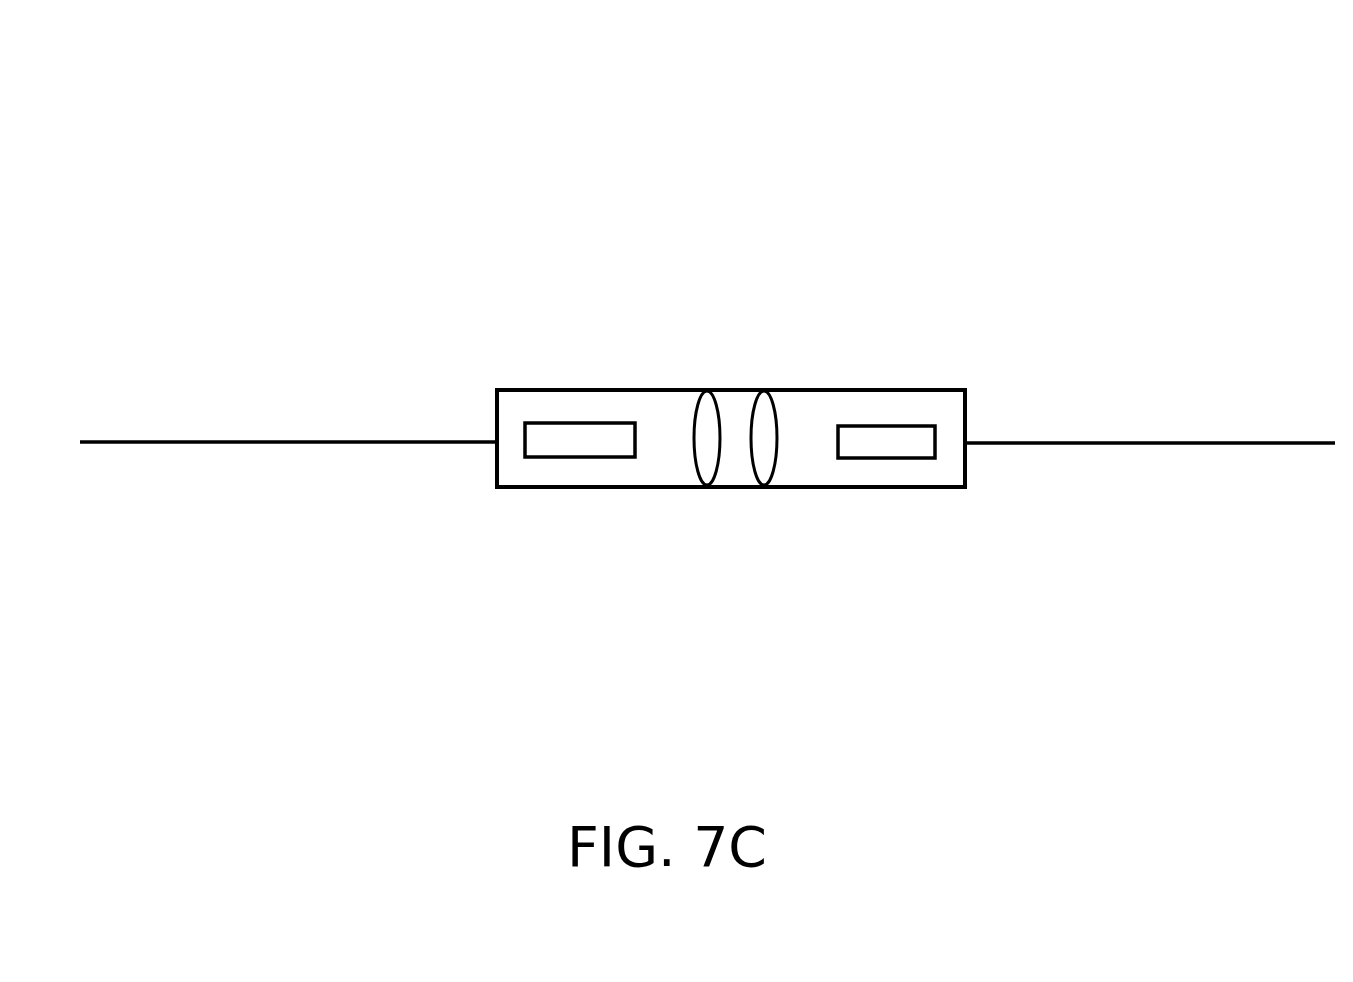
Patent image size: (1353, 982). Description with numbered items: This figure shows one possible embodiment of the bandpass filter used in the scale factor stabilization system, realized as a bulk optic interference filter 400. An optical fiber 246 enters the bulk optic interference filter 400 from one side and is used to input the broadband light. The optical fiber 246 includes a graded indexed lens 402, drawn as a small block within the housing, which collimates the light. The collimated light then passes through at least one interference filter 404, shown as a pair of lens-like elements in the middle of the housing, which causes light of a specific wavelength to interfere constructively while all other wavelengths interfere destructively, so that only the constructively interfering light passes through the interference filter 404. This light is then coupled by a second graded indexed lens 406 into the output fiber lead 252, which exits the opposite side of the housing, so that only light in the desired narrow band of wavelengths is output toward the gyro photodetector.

The optical fiber 246 is at (183, 440).
The output fiber lead 252 is at (1260, 443).
The bulk optic interference filter 400 is at (580, 240).
The graded indexed lens 402 is at (560, 457).
The interference filter 404 is at (737, 473).
The graded indexed lens 406 is at (895, 450).